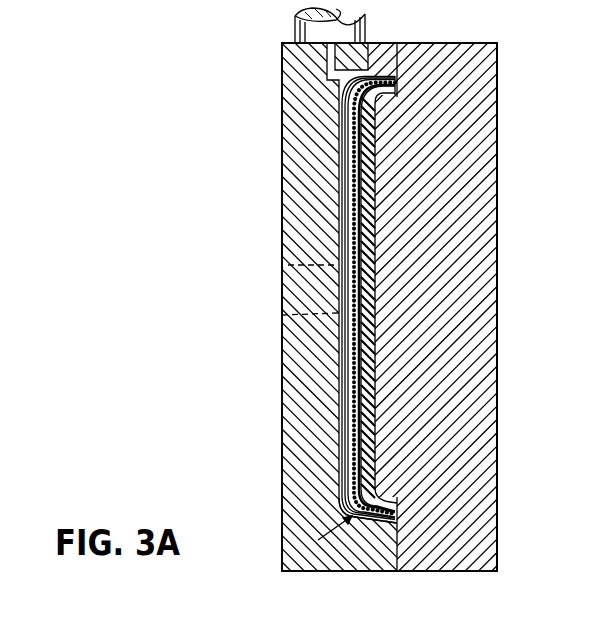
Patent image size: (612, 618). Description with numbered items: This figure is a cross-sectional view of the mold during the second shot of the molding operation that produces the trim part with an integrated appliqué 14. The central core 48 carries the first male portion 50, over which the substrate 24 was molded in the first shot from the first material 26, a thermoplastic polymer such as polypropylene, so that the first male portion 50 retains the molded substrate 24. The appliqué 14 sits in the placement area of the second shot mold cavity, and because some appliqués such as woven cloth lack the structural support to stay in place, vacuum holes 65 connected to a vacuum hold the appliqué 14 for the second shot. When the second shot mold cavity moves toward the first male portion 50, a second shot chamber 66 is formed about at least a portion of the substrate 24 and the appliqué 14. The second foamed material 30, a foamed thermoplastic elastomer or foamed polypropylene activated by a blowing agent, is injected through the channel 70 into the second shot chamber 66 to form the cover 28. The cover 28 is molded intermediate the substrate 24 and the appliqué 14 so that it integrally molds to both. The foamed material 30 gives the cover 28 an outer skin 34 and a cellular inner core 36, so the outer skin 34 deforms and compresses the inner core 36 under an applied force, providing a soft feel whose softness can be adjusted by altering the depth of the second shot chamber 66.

The appliqué 14 is at (332, 319).
The substrate 24 is at (375, 453).
The first material 26 is at (373, 488).
The cover 28 is at (345, 511).
The second foamed material 30 is at (329, 538).
The outer skin 34 is at (349, 218).
The cellular inner core 36 is at (343, 186).
The central core 48 is at (487, 192).
The first male portion 50 is at (380, 120).
The vacuum holes 65 is at (282, 328).
The second shot chamber 66 is at (378, 396).
The channel 70 is at (372, 62).